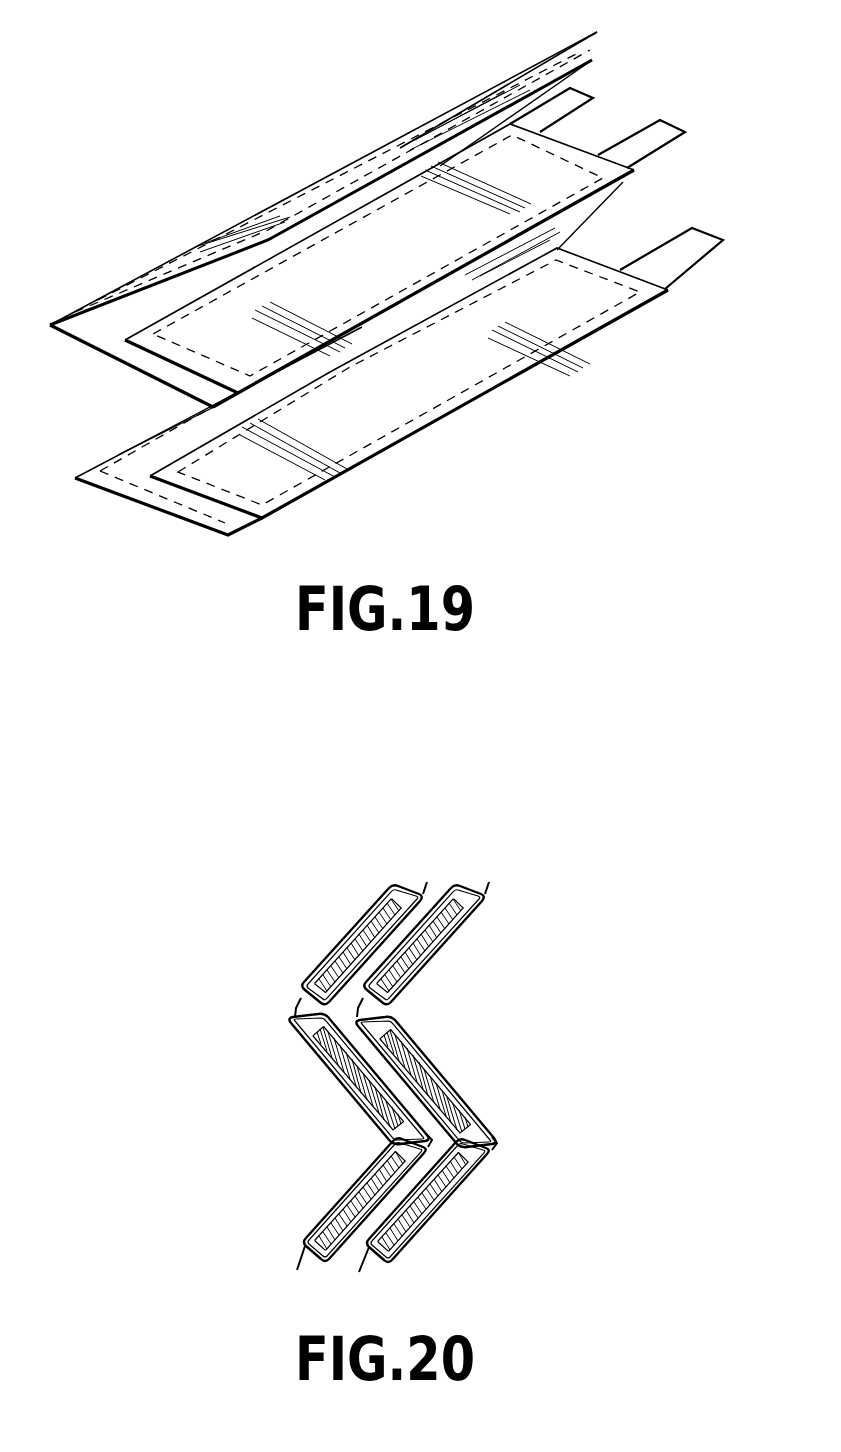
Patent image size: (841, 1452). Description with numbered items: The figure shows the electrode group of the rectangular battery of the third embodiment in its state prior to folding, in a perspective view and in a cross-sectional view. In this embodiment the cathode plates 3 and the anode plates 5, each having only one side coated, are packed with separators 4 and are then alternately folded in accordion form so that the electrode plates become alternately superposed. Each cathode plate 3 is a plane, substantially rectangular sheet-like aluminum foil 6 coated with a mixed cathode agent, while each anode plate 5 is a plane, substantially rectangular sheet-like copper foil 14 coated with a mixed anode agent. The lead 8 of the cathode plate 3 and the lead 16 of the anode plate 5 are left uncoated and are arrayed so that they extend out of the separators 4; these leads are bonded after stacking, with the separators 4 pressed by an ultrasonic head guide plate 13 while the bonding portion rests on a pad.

In FIG. 19, the cathode plate 3 is at (440, 245).
In FIG. 20, the cathode plate 3 is at (436, 954).
In FIG. 19, the separator 4 is at (100, 343).
In FIG. 20, the separator 4 is at (395, 889).
In FIG. 19, the anode plate 5 is at (300, 186).
In FIG. 20, the anode plate 5 is at (344, 934).
In FIG. 20, the aluminum foil 6 is at (400, 983).
In FIG. 19, the lead 8 is at (668, 128).
In FIG. 20, the ultrasonic head guide plate 13 is at (466, 928).
In FIG. 20, the copper foil 14 is at (314, 970).
In FIG. 19, the lead 16 is at (518, 63).